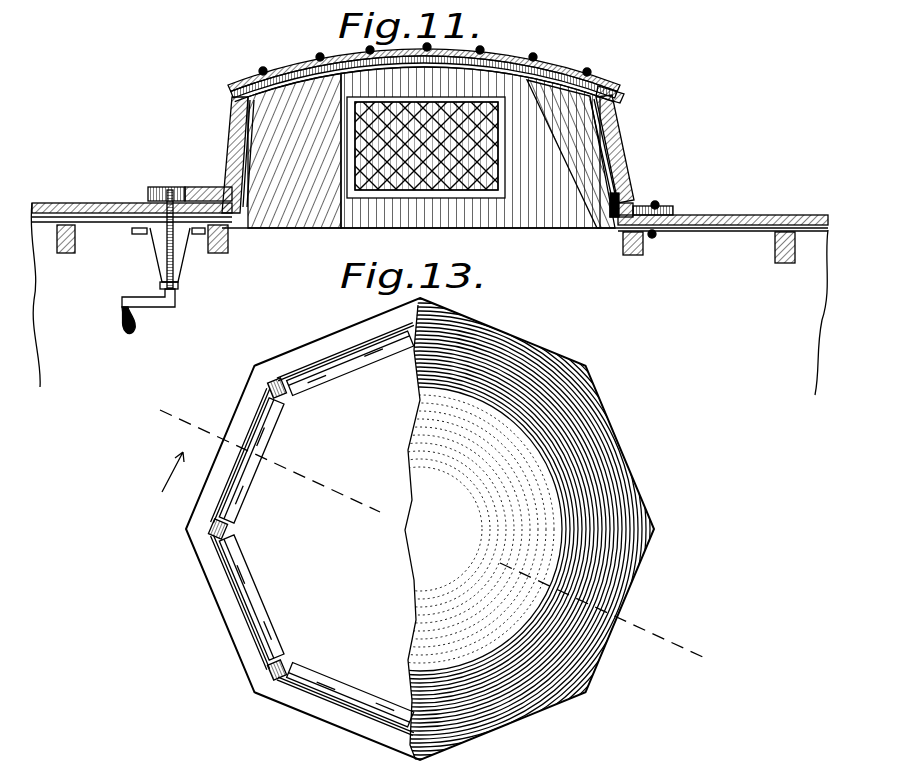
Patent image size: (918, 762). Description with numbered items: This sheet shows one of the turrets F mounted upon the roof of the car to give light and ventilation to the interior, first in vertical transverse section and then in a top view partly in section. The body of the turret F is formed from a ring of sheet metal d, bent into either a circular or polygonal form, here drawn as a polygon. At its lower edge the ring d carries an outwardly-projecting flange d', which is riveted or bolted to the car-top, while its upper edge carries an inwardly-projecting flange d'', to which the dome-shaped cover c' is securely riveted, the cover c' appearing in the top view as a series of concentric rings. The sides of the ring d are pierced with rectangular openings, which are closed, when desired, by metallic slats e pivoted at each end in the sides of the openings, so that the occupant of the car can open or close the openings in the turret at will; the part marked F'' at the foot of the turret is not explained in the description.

In FIG. 11, the dome-shaped cover c' is at (424, 71).
In FIG. 13, the dome-shaped cover c' is at (420, 529).
In FIG. 11, the turret F is at (408, 118).
In FIG. 13, the turret F is at (420, 529).
In FIG. 11, the wall plate bracket F'' is at (177, 244).
In FIG. 11, the inwardly-projecting flange d'' is at (613, 79).
In FIG. 11, the ring of sheet metal d is at (420, 147).
In FIG. 13, the ring of sheet metal d is at (310, 431).
In FIG. 11, the outwardly-projecting flange d' is at (719, 285).
In FIG. 13, the outwardly-projecting flange d' is at (292, 635).
In FIG. 13, the metallic slats e is at (254, 597).